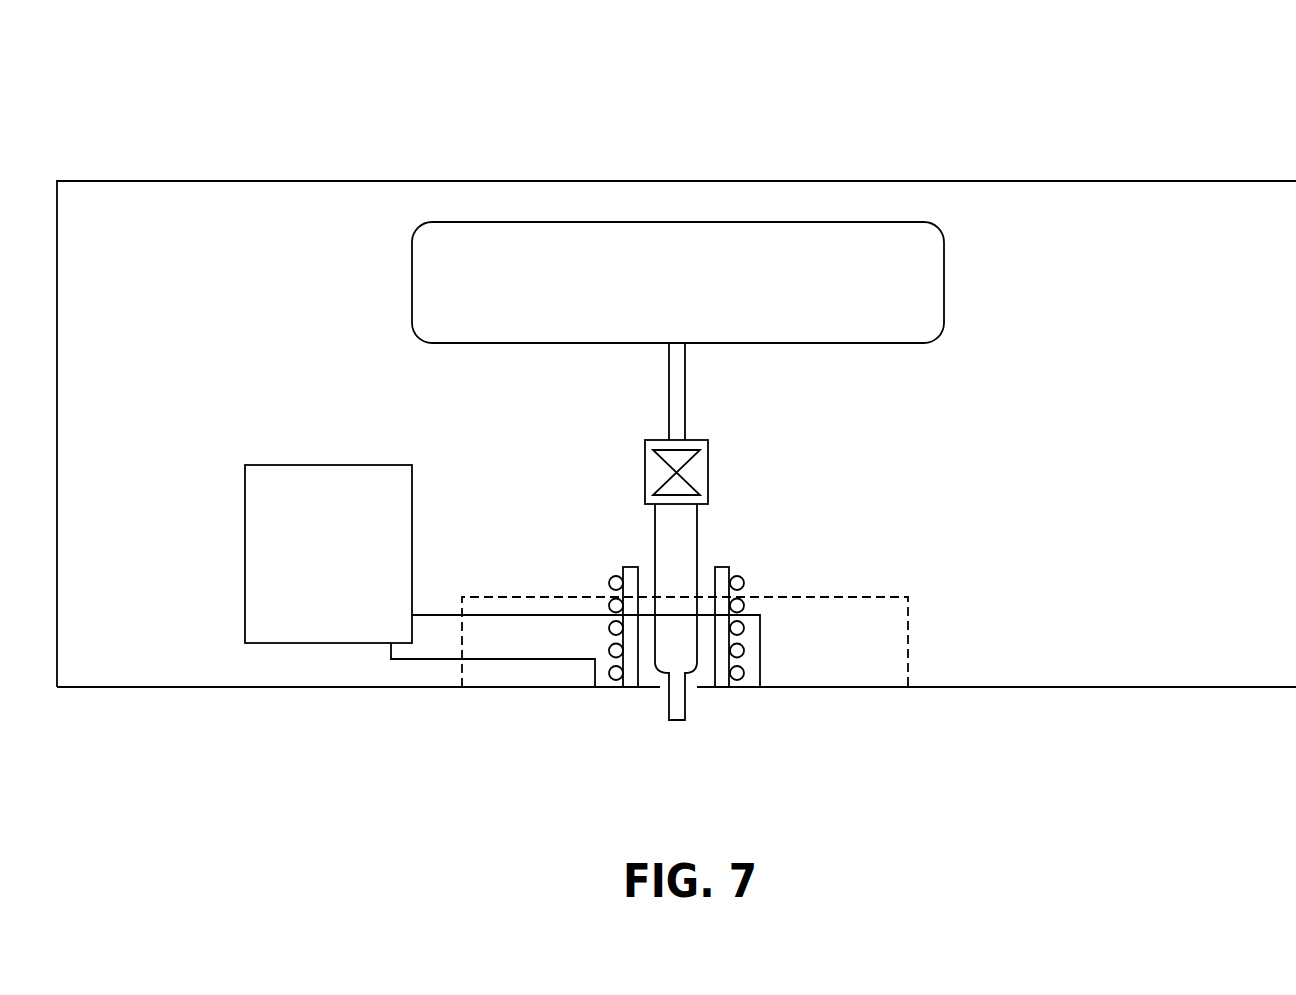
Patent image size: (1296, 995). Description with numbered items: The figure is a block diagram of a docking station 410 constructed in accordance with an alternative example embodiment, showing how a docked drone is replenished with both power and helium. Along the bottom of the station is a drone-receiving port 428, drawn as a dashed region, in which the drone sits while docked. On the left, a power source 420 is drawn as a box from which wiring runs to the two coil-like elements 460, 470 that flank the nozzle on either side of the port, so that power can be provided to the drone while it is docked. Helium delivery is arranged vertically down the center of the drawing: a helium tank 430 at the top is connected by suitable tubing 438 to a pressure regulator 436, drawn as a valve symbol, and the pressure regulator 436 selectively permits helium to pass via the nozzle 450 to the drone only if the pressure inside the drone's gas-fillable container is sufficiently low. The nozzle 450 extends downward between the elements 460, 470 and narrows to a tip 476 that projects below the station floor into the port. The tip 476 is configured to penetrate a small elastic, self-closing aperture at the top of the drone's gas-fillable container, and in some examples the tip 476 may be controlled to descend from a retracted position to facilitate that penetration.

The docking station 410 is at (262, 100).
The helium tank 430 is at (695, 306).
The tubing 438 is at (673, 394).
The pressure regulator 436 is at (645, 471).
The nozzle 450 is at (687, 537).
The tip 476 is at (670, 708).
The first coil 460 is at (600, 560).
The second coil 470 is at (760, 560).
The power source 420 is at (305, 604).
The drone-receiving port 428 is at (908, 635).